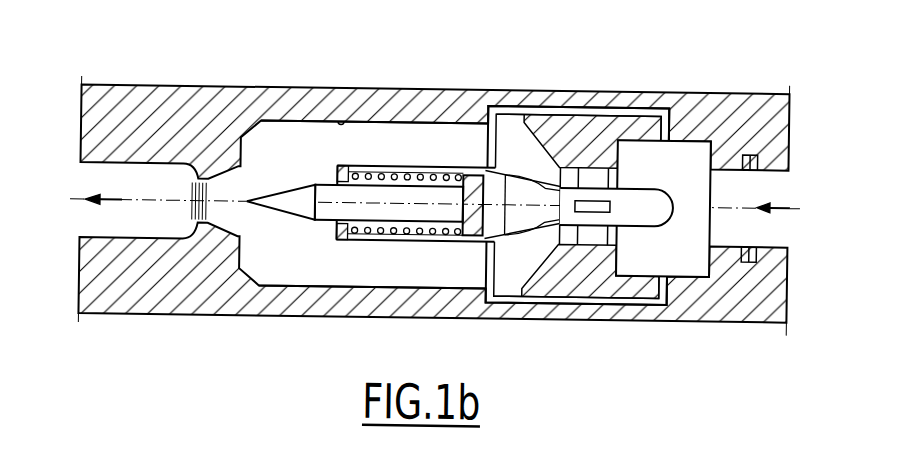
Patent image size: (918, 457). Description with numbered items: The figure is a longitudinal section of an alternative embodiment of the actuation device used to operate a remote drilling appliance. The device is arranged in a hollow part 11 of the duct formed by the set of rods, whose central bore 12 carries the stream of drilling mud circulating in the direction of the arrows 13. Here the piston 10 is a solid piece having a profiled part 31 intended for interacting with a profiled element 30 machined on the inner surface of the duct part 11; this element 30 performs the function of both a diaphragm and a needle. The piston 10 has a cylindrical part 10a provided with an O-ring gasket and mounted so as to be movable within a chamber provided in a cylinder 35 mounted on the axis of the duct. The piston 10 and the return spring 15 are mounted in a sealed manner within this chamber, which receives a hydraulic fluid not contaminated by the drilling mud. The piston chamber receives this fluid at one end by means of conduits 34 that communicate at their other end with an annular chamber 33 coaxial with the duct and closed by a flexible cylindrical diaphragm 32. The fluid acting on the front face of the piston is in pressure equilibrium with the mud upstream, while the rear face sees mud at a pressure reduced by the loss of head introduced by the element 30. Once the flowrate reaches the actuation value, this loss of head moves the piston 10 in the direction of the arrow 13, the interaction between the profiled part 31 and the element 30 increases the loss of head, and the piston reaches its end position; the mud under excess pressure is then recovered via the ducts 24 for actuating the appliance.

The piston 10 is at (316, 217).
The cylindrical part 10a is at (470, 232).
The duct part 11 is at (161, 109).
The central bore 12 is at (340, 115).
The arrows 13 is at (110, 205).
The return spring 15 is at (397, 236).
The ducts 24 is at (748, 248).
The profiled element 30 is at (205, 228).
The profiled part 31 is at (288, 189).
The flexible cylindrical diaphragm 32 is at (695, 164).
The annular chamber 33 is at (637, 144).
The conduits 34 is at (548, 100).
The cylinder 35 is at (540, 214).